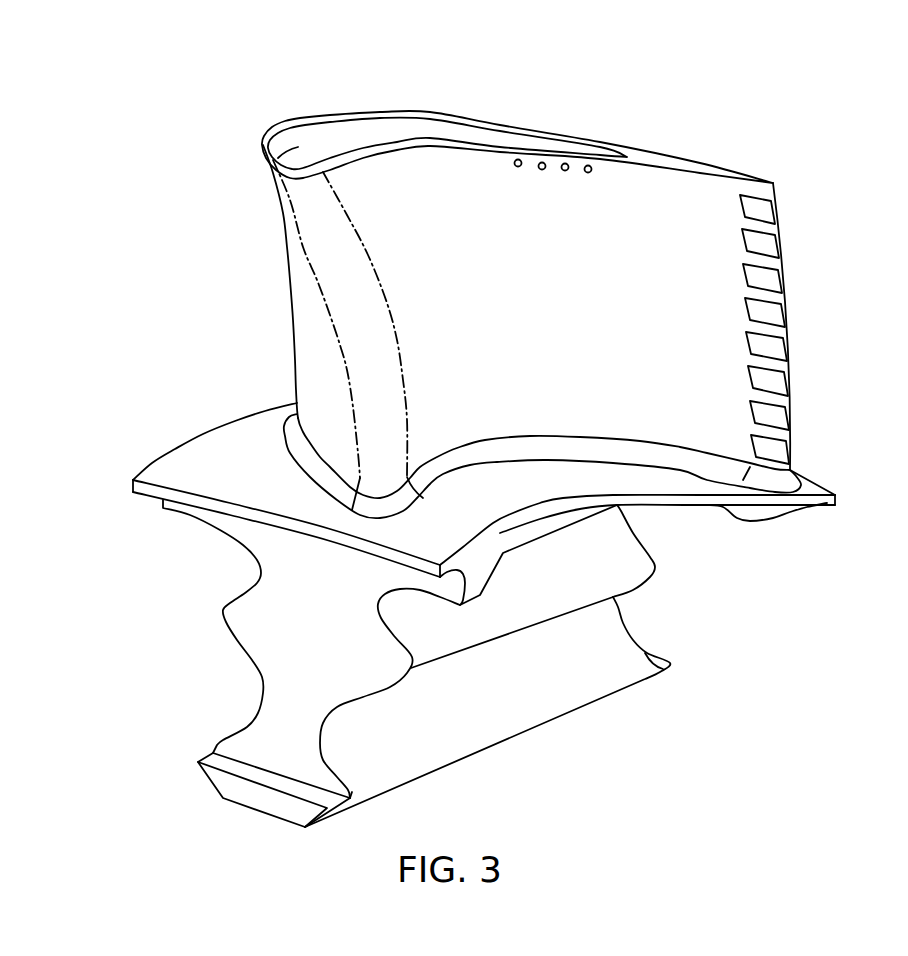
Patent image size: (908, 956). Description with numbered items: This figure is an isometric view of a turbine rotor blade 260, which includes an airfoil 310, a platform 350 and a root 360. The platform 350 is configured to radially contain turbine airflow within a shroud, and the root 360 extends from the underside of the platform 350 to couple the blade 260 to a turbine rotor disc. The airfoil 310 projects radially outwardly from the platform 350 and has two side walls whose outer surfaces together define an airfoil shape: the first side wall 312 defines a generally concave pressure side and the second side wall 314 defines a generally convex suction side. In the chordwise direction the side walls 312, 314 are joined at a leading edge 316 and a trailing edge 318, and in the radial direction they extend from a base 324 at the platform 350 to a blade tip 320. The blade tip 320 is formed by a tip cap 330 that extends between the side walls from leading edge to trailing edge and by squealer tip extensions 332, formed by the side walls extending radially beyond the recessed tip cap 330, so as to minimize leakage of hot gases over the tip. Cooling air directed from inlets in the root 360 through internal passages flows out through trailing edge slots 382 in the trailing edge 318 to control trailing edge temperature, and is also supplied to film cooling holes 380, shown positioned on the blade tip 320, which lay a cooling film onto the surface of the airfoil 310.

The rotor blade 260 is at (746, 120).
The airfoil 310 is at (462, 160).
The first side wall 312 is at (570, 336).
The second side wall 314 is at (294, 327).
The leading edge 316 is at (302, 228).
The trailing edge 318 is at (785, 262).
The blade tip 320 is at (252, 138).
The base 324 is at (293, 437).
The tip cap 330 is at (302, 160).
The squealer tip extensions 332 is at (521, 127).
The platform 350 is at (502, 513).
The root 360 is at (280, 655).
The film cooling holes 380 is at (565, 173).
The trailing edge slots 382 is at (778, 352).